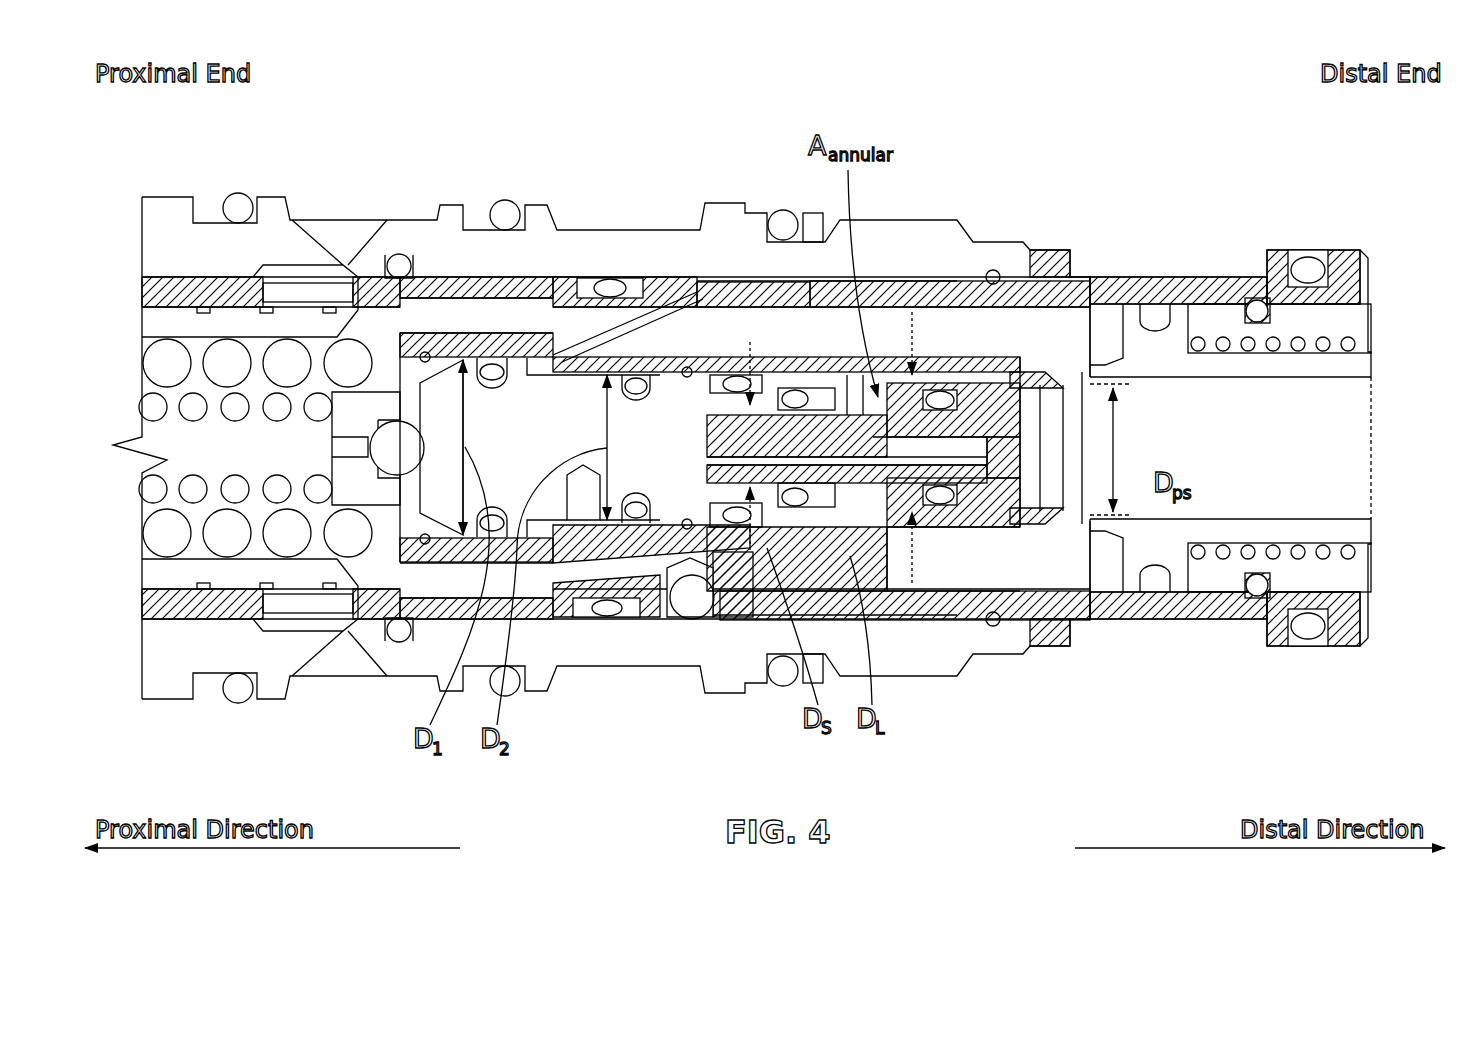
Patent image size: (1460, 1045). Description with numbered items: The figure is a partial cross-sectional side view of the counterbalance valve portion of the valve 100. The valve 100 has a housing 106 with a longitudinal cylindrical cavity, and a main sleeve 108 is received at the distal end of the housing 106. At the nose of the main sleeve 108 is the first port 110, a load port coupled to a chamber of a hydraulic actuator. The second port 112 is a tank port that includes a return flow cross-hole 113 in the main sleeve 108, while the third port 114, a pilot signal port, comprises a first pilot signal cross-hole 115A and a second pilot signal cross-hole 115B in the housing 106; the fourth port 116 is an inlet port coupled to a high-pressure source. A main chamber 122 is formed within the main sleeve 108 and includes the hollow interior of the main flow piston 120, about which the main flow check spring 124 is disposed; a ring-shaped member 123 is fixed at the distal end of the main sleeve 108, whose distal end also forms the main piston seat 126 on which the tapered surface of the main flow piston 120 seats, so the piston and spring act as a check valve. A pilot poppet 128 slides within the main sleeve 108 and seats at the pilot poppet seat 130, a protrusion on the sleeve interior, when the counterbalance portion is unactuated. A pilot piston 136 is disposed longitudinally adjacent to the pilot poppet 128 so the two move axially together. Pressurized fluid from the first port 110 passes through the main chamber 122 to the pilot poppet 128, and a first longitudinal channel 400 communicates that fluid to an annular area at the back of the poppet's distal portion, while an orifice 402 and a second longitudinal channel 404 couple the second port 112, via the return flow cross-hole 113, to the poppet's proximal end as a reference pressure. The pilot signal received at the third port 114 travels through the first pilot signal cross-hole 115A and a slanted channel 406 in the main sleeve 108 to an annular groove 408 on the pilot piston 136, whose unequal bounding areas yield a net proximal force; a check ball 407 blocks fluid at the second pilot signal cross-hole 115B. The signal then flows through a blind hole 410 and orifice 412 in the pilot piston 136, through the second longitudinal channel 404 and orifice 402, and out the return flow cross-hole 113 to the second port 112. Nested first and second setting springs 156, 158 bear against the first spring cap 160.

The valve 100 is at (453, 97).
The housing 106 is at (205, 197).
The main sleeve 108 is at (1200, 277).
The first port 110 is at (1375, 472).
The second port 112 is at (1150, 640).
The return flow cross-hole 113 is at (1048, 638).
The third port 114 is at (568, 213).
The first pilot signal cross-hole 115A is at (690, 275).
The second pilot signal cross-hole 115B is at (692, 620).
The fourth port 116 is at (405, 200).
The main flow piston 120 is at (1127, 318).
The main chamber 122 is at (1250, 480).
The ring-shaped member 123 is at (1360, 255).
The main flow check spring 124 is at (1323, 558).
The main piston seat 126 is at (1075, 540).
The pilot poppet 128 is at (1022, 470).
The pilot poppet seat 130 is at (1040, 380).
The pilot piston 136 is at (432, 493).
The first setting spring 156 is at (348, 365).
The second setting spring 158 is at (193, 407).
The first spring cap 160 is at (383, 365).
The first longitudinal channel 400 is at (967, 432).
The orifice 402 is at (1010, 440).
The second longitudinal channel 404 is at (837, 460).
The channel 406 is at (642, 483).
The check ball 407 is at (707, 558).
The annular groove 408 is at (528, 530).
The blind hole 410 is at (578, 502).
The orifice 412 is at (615, 500).